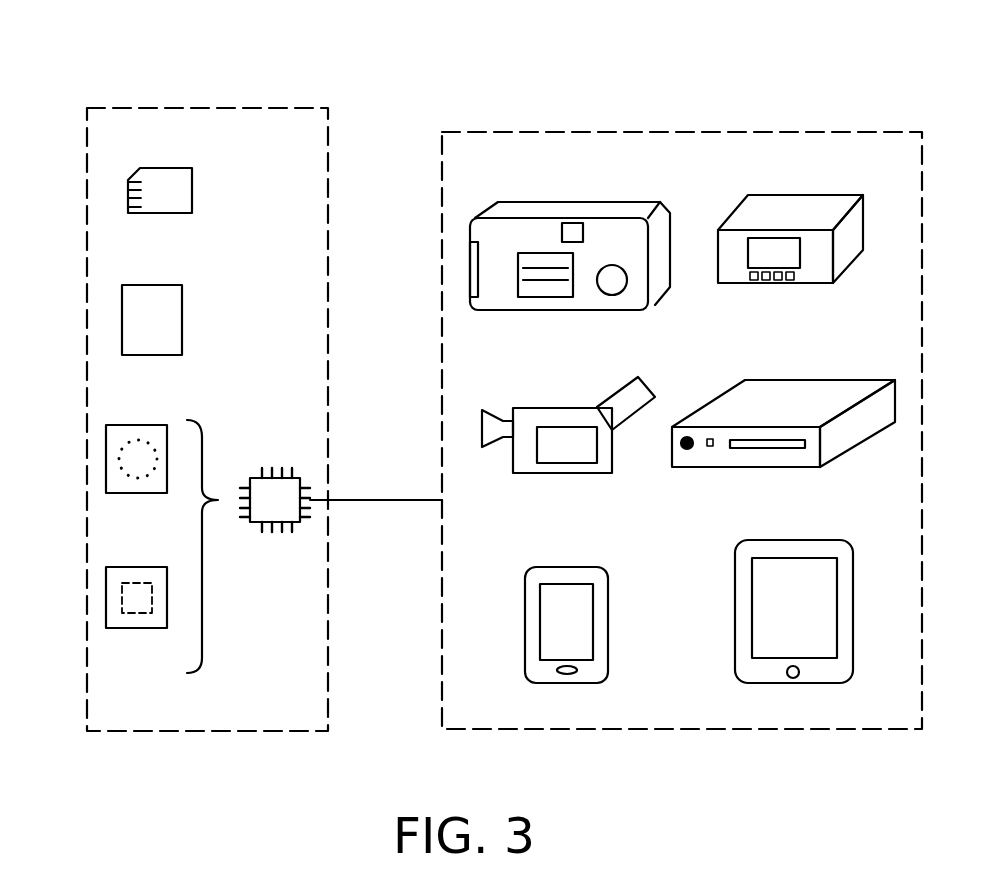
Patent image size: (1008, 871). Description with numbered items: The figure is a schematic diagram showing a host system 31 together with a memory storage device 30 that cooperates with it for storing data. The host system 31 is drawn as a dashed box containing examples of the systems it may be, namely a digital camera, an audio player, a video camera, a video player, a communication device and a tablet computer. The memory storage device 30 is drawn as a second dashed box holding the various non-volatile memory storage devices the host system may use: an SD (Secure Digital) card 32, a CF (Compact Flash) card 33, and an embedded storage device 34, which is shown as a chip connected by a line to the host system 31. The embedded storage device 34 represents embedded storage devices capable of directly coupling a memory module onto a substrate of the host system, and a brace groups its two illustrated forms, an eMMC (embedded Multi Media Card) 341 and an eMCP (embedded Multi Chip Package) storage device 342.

The memory storage device 30 is at (197, 107).
The host system 31 is at (605, 130).
The SD card 32 is at (128, 197).
The CF card 33 is at (122, 320).
The embedded storage device 34 is at (277, 475).
The eMMC 341 is at (106, 461).
The eMCP storage device 342 is at (106, 600).